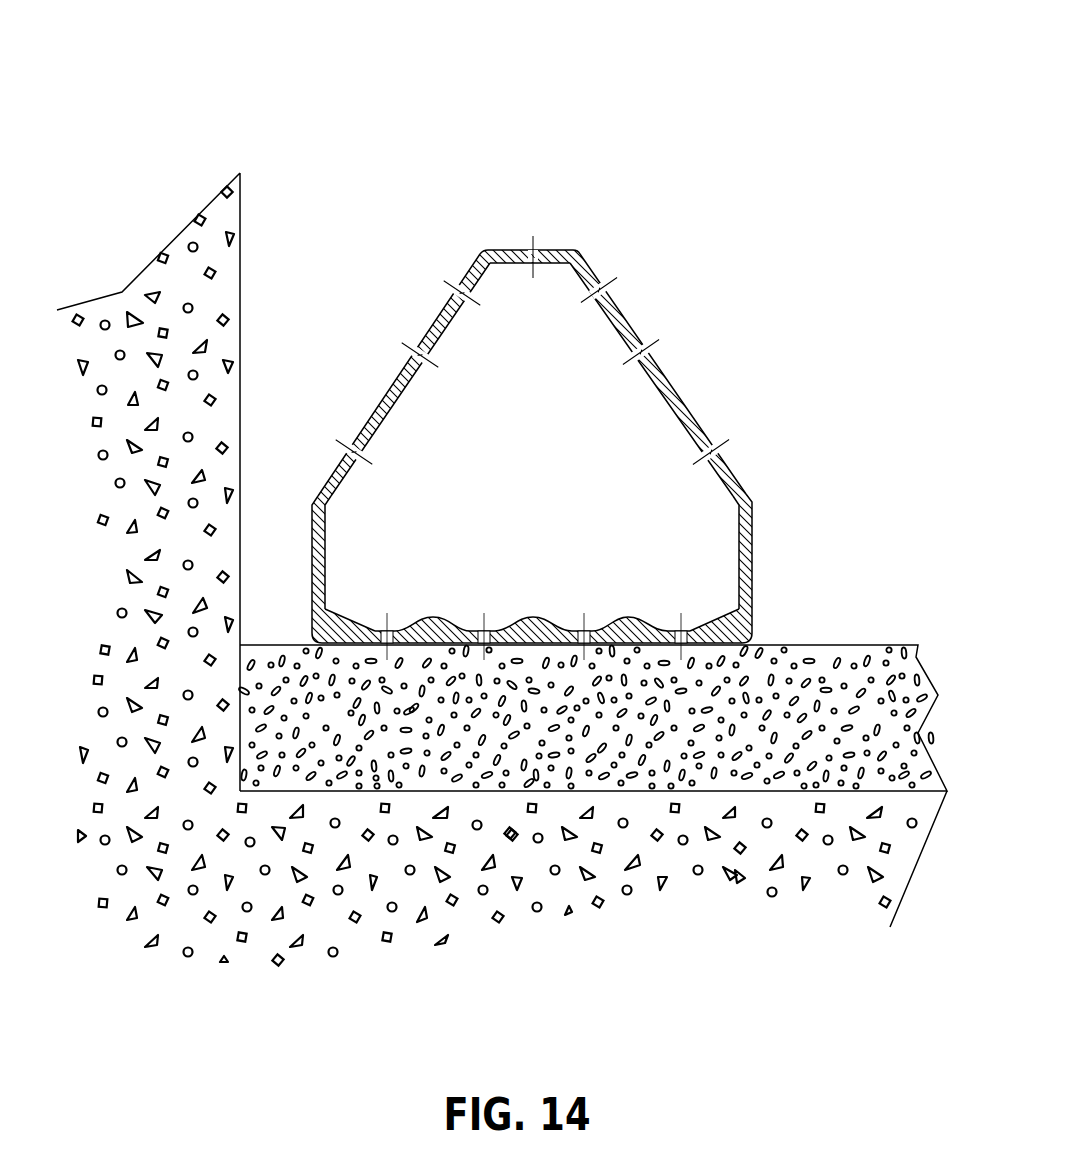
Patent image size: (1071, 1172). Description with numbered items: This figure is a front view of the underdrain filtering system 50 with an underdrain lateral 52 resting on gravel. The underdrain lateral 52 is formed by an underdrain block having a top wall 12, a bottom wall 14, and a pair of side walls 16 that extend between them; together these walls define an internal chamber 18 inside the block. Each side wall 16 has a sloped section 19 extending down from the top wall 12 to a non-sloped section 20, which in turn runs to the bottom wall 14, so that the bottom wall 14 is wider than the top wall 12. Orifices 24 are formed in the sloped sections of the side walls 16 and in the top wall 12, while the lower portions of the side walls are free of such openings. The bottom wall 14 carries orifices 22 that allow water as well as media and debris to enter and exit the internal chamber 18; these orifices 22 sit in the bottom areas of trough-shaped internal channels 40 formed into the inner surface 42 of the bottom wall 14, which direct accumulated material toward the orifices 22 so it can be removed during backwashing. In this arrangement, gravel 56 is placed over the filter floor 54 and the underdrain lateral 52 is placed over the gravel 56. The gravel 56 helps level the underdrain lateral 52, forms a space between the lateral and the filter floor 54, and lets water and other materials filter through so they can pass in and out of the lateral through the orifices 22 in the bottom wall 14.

The top wall 12 is at (567, 248).
The bottom wall 14 is at (742, 641).
The side walls 16 is at (309, 498).
The internal chamber 18 is at (518, 491).
The sloped section 19 is at (380, 397).
The non-sloped section 20 is at (314, 566).
The orifices 22 is at (684, 629).
The orifices 24 is at (530, 250).
The internal channels 40 is at (661, 626).
The inner surface 42 is at (530, 620).
The underdrain filtering system 50 is at (794, 84).
The underdrain lateral 52 is at (444, 210).
The filter floor 54 is at (847, 793).
The gravel 56 is at (848, 645).